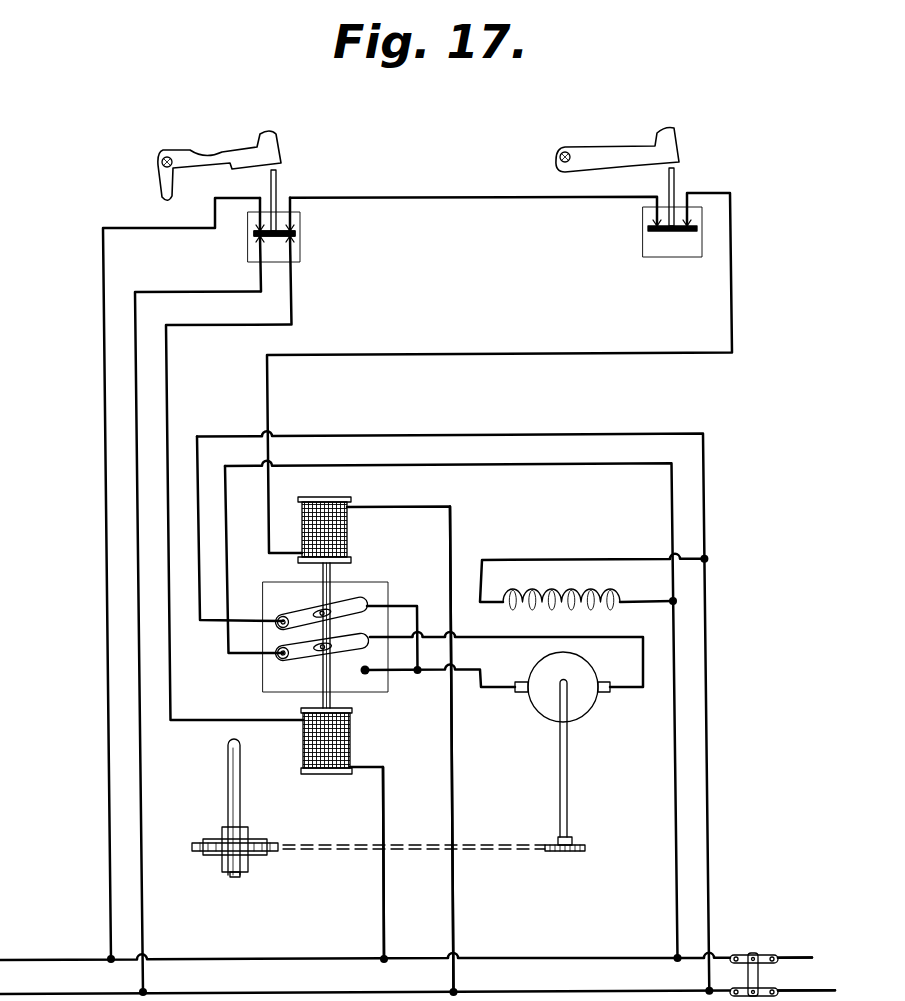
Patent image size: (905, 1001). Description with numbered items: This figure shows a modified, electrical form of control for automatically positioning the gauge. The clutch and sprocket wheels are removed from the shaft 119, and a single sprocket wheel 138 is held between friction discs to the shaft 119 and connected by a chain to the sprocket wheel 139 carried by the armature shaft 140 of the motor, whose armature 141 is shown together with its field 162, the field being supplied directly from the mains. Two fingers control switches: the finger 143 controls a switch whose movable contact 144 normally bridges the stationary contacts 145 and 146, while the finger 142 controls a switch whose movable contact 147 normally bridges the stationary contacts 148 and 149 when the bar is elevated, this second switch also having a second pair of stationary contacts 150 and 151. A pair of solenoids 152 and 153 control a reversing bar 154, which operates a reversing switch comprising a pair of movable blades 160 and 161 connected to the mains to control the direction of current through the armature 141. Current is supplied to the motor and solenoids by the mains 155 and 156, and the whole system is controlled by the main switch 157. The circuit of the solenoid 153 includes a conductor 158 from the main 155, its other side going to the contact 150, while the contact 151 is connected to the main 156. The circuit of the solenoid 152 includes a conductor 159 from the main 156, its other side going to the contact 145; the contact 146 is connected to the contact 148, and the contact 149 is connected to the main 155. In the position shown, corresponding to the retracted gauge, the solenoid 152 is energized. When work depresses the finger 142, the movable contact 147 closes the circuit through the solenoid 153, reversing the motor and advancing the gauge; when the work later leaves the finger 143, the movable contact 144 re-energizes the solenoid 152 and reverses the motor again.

The shaft 119 is at (242, 807).
The sprocket wheel 138 is at (194, 842).
The sprocket wheel 139 is at (563, 854).
The armature shaft 140 is at (573, 778).
The armature 141 is at (583, 693).
The finger 142 is at (272, 151).
The finger 143 is at (670, 142).
The movable contact 144 is at (680, 234).
The stationary contact 145 is at (692, 220).
The stationary contact 146 is at (654, 224).
The movable contact 147 is at (295, 238).
The stationary contact 148 is at (293, 228).
The stationary contact 149 is at (258, 229).
The stationary contact 150 is at (294, 250).
The stationary contact 151 is at (258, 241).
The solenoid 152 is at (350, 535).
The solenoid 153 is at (353, 745).
The reversing bar 154 is at (321, 694).
The main 155 is at (794, 946).
The main 156 is at (801, 943).
The main switch 157 is at (752, 952).
The conductor 158 is at (382, 904).
The conductor 159 is at (454, 830).
The movable blade 160 is at (357, 602).
The movable blade 161 is at (350, 646).
The field 162 is at (560, 592).